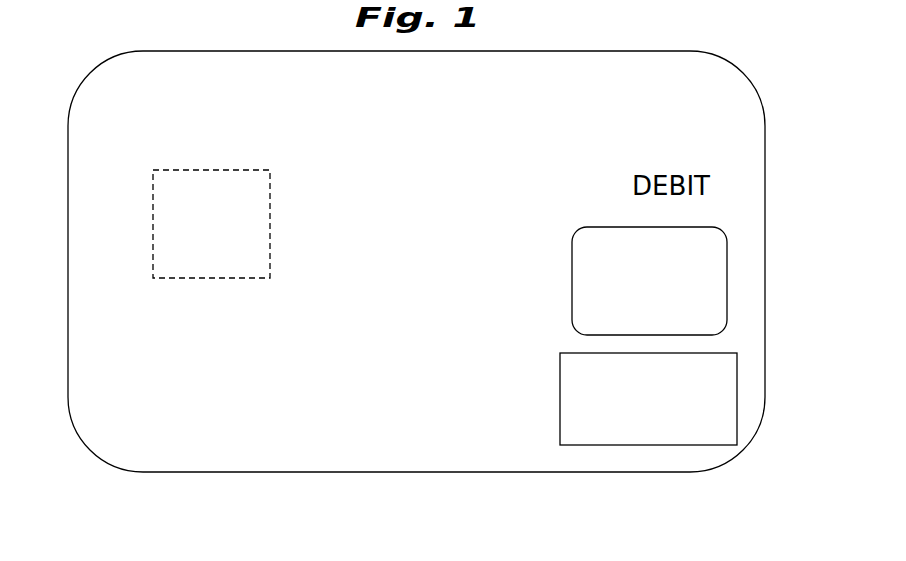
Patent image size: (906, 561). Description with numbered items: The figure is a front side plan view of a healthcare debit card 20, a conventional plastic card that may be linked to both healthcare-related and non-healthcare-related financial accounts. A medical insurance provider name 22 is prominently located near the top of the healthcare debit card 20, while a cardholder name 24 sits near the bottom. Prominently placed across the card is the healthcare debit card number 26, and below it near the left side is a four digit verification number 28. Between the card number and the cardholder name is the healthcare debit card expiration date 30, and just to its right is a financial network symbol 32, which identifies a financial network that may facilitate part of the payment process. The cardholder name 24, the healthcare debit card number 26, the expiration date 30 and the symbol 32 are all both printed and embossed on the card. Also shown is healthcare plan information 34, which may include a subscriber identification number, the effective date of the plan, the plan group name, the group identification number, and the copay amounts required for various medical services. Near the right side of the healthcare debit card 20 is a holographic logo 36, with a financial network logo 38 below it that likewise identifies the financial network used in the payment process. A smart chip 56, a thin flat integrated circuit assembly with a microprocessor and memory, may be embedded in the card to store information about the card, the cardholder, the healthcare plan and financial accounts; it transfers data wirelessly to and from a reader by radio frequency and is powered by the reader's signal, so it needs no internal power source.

The healthcare debit card 20 is at (106, 462).
The medical insurance provider name 22 is at (474, 100).
The cardholder name 24 is at (318, 435).
The healthcare debit card number 26 is at (125, 315).
The four digit verification number 28 is at (130, 354).
The healthcare debit card expiration date 30 is at (390, 402).
The financial network symbol 32 is at (512, 402).
The healthcare plan information 34 is at (432, 225).
The holographic logo 36 is at (710, 283).
The financial network logo 38 is at (698, 435).
The smart chip 56 is at (153, 225).